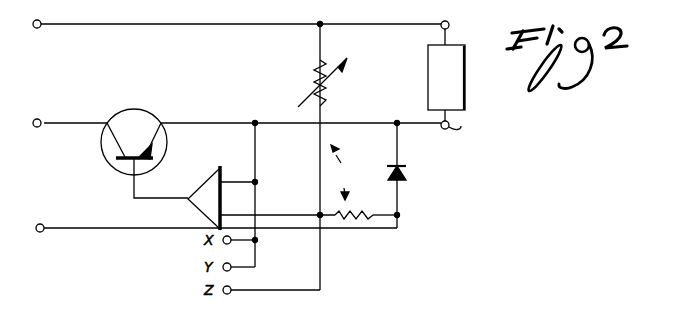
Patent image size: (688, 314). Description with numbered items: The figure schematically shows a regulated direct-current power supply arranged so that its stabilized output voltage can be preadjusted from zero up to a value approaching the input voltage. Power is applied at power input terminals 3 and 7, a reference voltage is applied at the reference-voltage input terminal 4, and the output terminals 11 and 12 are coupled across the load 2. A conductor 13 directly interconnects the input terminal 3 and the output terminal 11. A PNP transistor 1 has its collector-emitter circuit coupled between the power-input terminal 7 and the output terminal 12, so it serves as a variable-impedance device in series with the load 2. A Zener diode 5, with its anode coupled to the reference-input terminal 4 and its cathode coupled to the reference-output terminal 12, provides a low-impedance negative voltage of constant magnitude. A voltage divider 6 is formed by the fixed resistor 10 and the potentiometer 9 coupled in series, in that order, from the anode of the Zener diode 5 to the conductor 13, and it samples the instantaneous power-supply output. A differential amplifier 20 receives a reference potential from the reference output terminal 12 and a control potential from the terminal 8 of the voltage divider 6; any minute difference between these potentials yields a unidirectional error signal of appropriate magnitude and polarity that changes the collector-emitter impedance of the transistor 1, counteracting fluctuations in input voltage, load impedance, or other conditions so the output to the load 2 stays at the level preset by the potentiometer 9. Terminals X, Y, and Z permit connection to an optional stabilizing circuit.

The transistor 1 is at (154, 113).
The load 2 is at (450, 60).
The power input terminal 3 is at (34, 28).
The reference-voltage input terminal 4 is at (37, 232).
The Zener diode 5 is at (404, 174).
The voltage divider 6 is at (340, 172).
The power input terminal 7 is at (34, 119).
The terminal of the voltage divider 8 is at (318, 213).
The potentiometer 9 is at (330, 93).
The fixed resistor 10 is at (352, 210).
The output terminal 11 is at (449, 27).
The reference output terminal 12 is at (449, 122).
The conductor 13 is at (210, 24).
The differential amplifier 20 is at (222, 168).